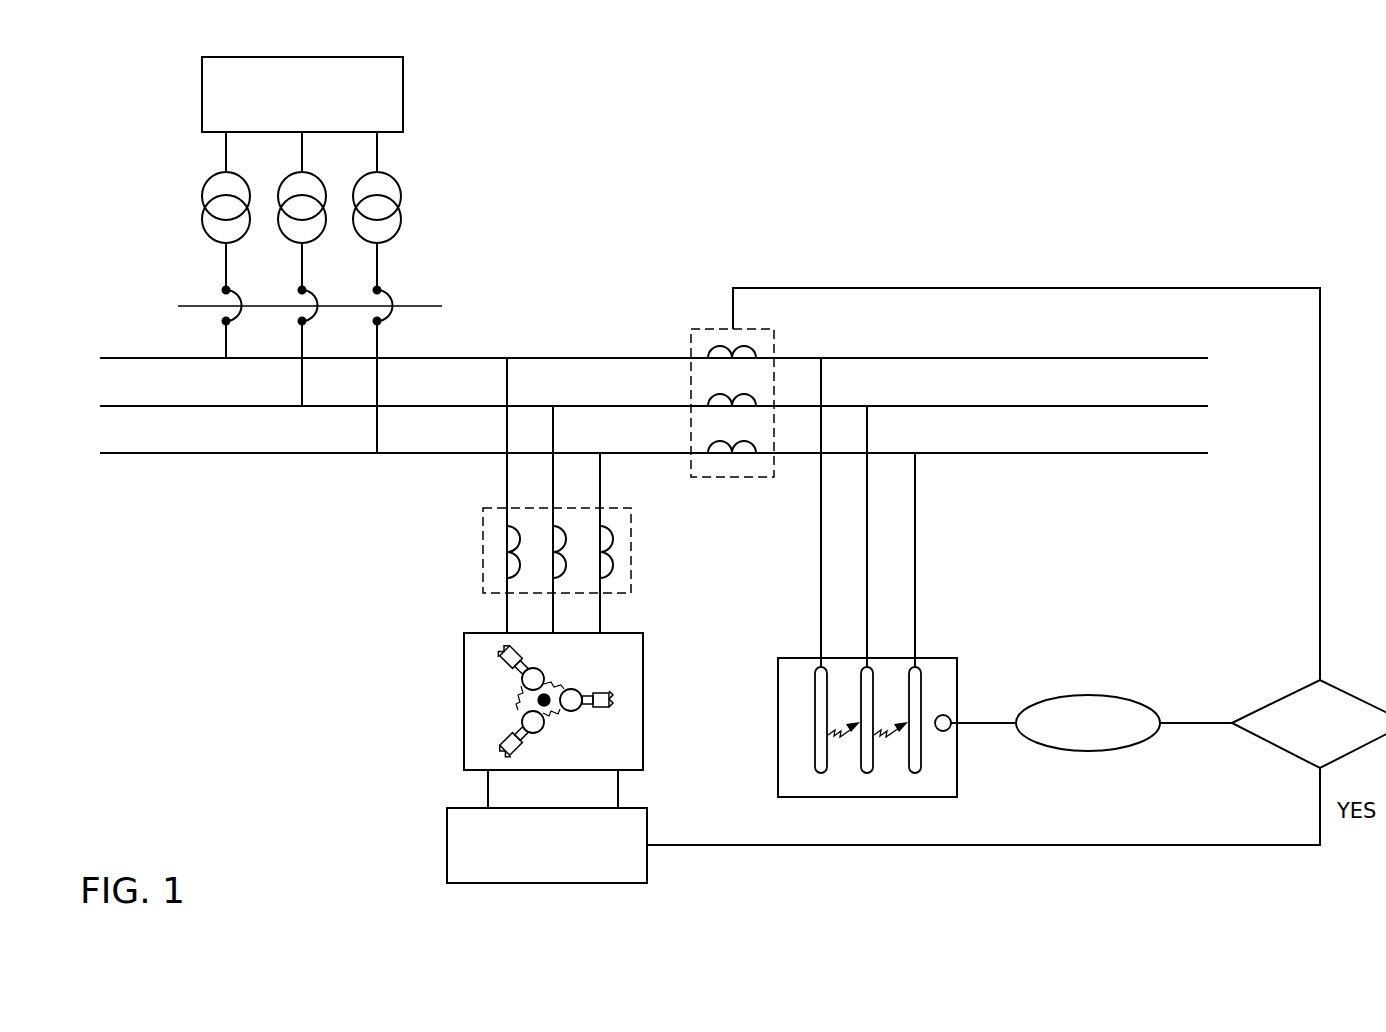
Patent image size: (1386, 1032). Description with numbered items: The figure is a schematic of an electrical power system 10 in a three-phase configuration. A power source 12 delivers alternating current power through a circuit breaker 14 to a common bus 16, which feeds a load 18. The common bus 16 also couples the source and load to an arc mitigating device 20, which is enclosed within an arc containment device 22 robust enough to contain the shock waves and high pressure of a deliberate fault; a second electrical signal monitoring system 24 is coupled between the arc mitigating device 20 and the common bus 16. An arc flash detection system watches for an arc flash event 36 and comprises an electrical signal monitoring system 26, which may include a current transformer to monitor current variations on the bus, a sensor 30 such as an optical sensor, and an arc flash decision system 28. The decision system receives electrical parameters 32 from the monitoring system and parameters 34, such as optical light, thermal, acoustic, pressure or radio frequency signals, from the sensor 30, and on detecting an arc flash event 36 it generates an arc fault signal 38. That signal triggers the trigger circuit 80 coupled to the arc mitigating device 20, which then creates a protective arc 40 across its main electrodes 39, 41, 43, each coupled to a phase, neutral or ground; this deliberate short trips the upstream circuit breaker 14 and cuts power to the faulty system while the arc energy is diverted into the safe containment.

The electrical power system 10 is at (1256, 87).
The power source 12 is at (403, 91).
The circuit breaker 14 is at (190, 282).
The common bus 16 is at (136, 472).
The load 18 is at (874, 595).
The arc mitigating device 20 is at (520, 701).
The arc containment device 22 is at (464, 699).
The second electrical signal monitoring system 24 is at (631, 548).
The electrical signal monitoring system 26 is at (733, 477).
The arc flash decision system 28 is at (1258, 708).
The sensor 30 is at (1090, 695).
The electrical parameters 32 is at (1320, 590).
The parameters 34 is at (1180, 722).
The arc flash event 36 is at (843, 737).
The arc fault signal 38 is at (1320, 812).
The main electrode 39 is at (537, 730).
The protective arc 40 is at (566, 710).
The main electrode 41 is at (573, 690).
The main electrode 43 is at (534, 672).
The trigger circuit 80 is at (447, 842).